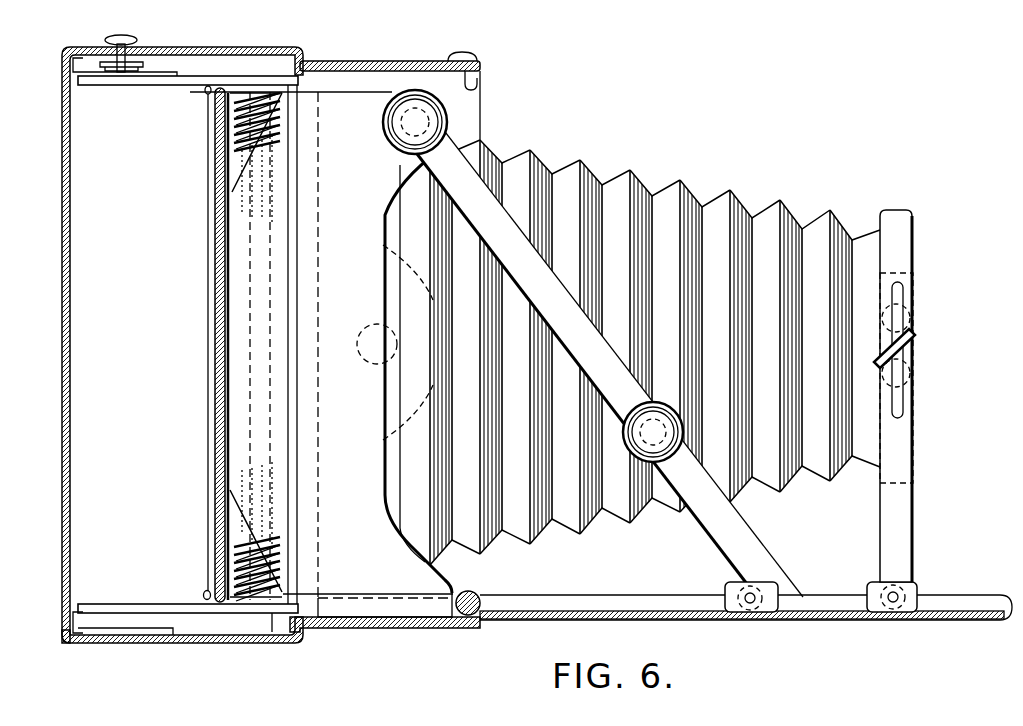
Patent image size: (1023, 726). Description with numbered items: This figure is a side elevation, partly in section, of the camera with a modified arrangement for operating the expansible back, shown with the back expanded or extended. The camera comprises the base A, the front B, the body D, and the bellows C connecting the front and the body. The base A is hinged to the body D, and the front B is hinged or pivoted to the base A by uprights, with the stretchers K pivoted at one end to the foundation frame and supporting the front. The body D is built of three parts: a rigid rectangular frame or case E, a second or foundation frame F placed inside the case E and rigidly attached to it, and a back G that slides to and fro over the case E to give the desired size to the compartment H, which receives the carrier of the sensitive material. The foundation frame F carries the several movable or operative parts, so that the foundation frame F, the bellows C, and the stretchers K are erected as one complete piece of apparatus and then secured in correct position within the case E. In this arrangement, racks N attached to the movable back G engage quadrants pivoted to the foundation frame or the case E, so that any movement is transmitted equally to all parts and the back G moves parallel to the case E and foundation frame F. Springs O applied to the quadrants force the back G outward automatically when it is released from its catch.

The back G is at (166, 345).
The compartment H is at (237, 344).
The springs O is at (237, 540).
The racks N is at (185, 335).
The body D is at (182, 645).
The foundation frame F is at (321, 354).
The bellows C is at (655, 347).
The stretchers K is at (593, 343).
The case E is at (385, 351).
The base A is at (746, 594).
The front B is at (904, 396).